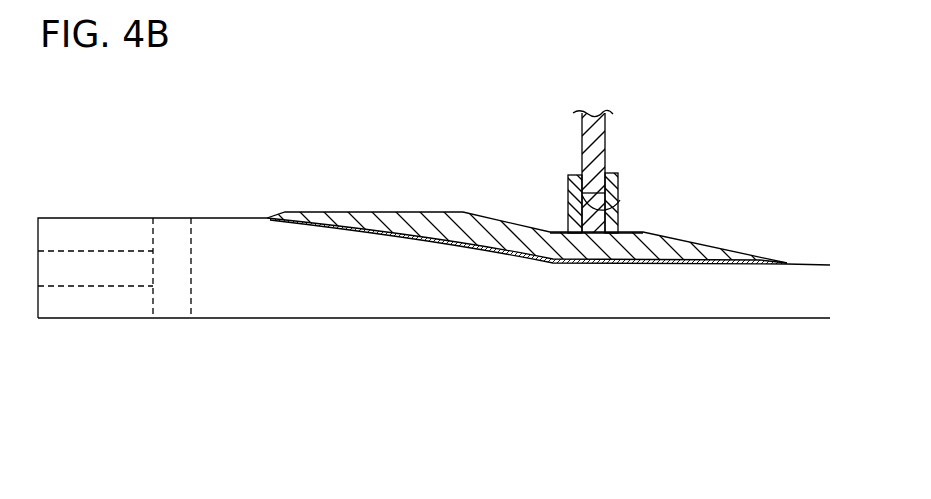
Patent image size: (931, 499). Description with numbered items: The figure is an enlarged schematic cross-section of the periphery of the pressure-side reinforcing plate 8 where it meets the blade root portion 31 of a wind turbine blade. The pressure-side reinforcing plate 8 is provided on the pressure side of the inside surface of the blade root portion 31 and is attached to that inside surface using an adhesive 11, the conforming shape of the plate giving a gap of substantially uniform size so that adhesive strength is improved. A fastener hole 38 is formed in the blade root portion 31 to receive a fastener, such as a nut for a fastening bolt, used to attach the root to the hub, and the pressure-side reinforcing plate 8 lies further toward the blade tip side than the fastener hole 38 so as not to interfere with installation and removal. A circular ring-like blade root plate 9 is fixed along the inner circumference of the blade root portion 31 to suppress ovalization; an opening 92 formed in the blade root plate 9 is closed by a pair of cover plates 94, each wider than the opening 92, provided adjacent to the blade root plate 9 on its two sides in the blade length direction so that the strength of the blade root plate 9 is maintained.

The pressure-side reinforcing plate 8 is at (407, 212).
The blade root plate 9 is at (607, 145).
The adhesive 11 is at (780, 262).
The blade root portion 31 is at (372, 312).
The fastener hole 38 is at (117, 284).
The opening 92 is at (620, 200).
The cover plate 94 is at (568, 197).